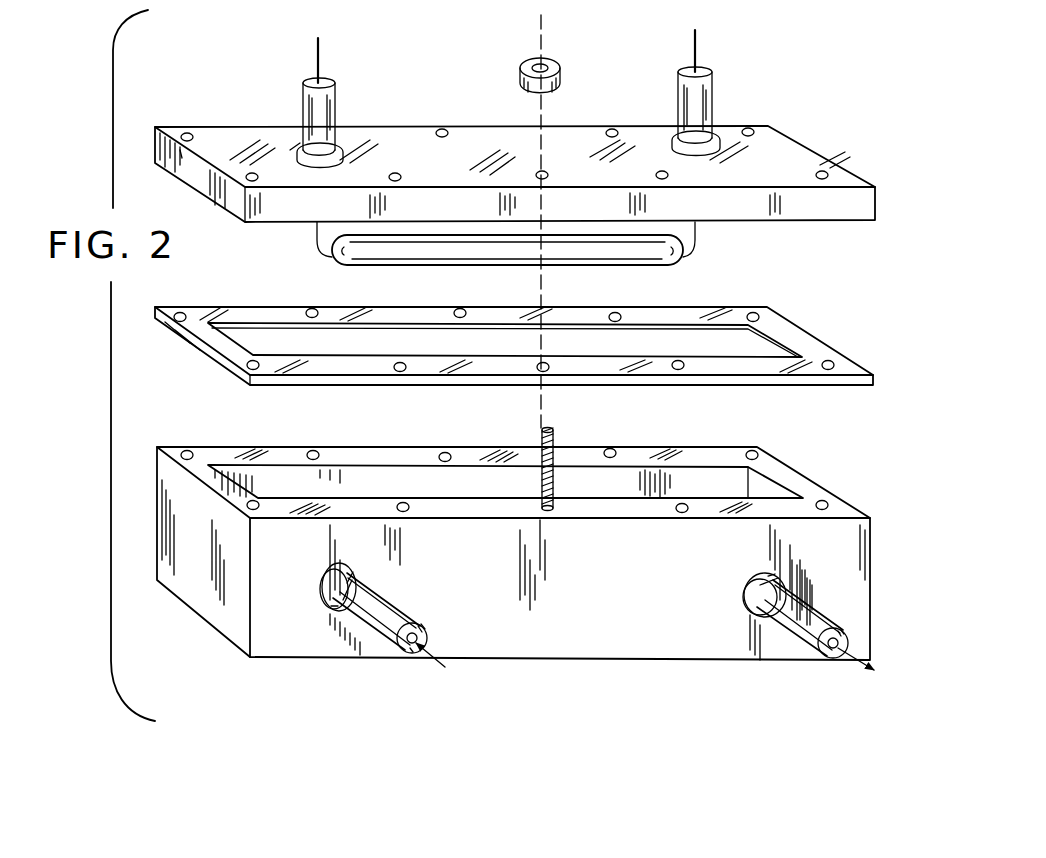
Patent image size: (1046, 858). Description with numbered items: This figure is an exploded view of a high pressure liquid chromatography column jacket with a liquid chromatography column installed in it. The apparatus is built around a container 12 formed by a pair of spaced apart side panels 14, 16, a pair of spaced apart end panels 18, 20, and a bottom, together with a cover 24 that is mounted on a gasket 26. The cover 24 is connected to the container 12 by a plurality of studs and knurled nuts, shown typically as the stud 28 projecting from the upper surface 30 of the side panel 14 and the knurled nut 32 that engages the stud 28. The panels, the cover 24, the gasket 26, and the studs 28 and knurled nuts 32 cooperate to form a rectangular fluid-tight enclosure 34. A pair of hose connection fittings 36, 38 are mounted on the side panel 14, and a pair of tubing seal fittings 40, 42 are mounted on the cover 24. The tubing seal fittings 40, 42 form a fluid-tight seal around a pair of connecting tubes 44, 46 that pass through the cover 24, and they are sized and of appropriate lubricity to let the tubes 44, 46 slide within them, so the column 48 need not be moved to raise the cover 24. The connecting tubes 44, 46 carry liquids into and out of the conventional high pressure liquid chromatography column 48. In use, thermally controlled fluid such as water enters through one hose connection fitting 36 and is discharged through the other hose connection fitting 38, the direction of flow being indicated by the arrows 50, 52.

The container 12 is at (557, 555).
The side panel 14 is at (522, 555).
The side panel 16 is at (678, 478).
The end panel 18 is at (222, 616).
The end panel 20 is at (808, 482).
The cover 24 is at (810, 151).
The gasket 26 is at (778, 315).
The stud 28 is at (555, 482).
The upper surface 30 is at (652, 510).
The knurled nut 32 is at (552, 64).
The rectangular fluid-tight enclosure 34 is at (533, 326).
The hose connection fitting 36 is at (385, 605).
The hose connection fitting 38 is at (778, 607).
The tubing seal fitting 40 is at (330, 117).
The tubing seal fitting 42 is at (705, 102).
The connecting tube 44 is at (326, 56).
The connecting tube 46 is at (700, 56).
The high pressure liquid chromatography column 48 is at (665, 268).
The arrow 50 is at (445, 667).
The arrow 52 is at (842, 670).